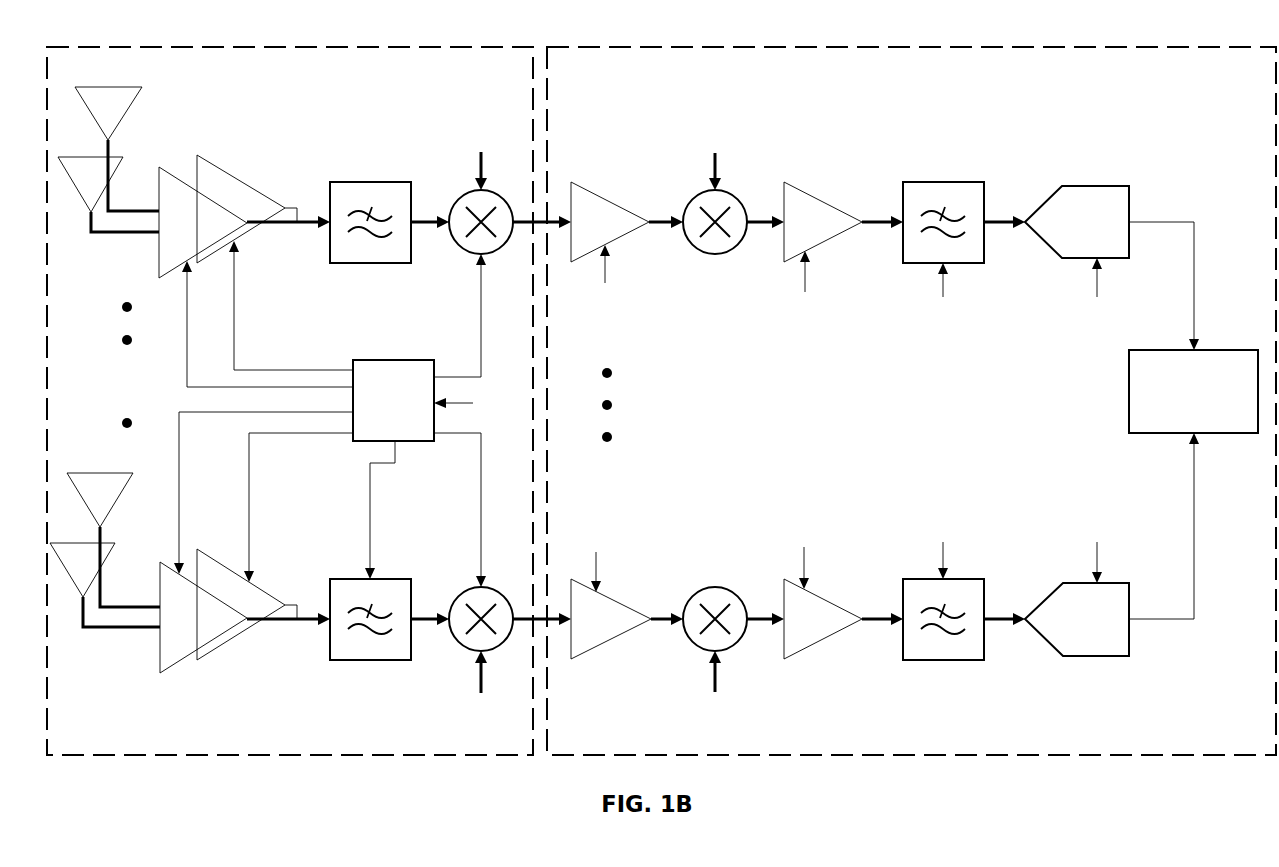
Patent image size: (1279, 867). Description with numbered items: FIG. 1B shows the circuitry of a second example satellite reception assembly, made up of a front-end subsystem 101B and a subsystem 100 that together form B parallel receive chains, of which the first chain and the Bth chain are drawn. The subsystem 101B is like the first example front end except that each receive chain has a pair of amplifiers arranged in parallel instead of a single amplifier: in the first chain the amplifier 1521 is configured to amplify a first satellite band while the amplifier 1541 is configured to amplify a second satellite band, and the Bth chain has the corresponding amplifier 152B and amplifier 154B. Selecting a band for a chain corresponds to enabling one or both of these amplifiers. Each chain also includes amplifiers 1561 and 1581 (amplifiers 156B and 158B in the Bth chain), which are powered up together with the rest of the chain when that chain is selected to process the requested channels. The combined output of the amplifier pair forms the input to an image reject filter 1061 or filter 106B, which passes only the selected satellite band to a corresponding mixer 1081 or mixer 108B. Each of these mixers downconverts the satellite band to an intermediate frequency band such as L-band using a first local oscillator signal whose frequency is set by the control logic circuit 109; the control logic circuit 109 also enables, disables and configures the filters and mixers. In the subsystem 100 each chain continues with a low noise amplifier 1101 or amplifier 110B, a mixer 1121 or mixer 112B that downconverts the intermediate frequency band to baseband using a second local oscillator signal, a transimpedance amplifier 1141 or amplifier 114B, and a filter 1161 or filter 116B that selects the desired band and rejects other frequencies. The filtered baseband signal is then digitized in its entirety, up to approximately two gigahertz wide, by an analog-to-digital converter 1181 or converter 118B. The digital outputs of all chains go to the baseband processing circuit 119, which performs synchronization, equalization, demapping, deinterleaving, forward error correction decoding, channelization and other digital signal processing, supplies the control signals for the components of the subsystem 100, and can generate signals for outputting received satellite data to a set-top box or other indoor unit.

The subsystem 100 is at (887, 47).
The subsystem 101B is at (283, 47).
The amplifier 1521 is at (114, 87).
The amplifier 1541 is at (76, 150).
The amplifier 1561 is at (164, 169).
The amplifier 1581 is at (210, 163).
The filter 1061 is at (383, 183).
The mixer 1081 is at (501, 198).
The control logic circuit 109 is at (419, 360).
The amplifier 1101 is at (608, 203).
The mixer 1121 is at (735, 199).
The amplifier 1141 is at (822, 203).
The filter 1161 is at (955, 183).
The analog-to-digital converter 1181 is at (1102, 184).
The baseband processing circuit 119 is at (1233, 345).
The amplifier 152B is at (107, 473).
The amplifier 154B is at (70, 536).
The amplifier 156B is at (168, 672).
The amplifier 158B is at (226, 642).
The filter 106B is at (390, 577).
The mixer 108B is at (500, 594).
The amplifier 110B is at (608, 599).
The mixer 112B is at (731, 591).
The amplifier 114B is at (822, 599).
The filter 116B is at (957, 578).
The analog-to-digital converter 118B is at (1117, 579).